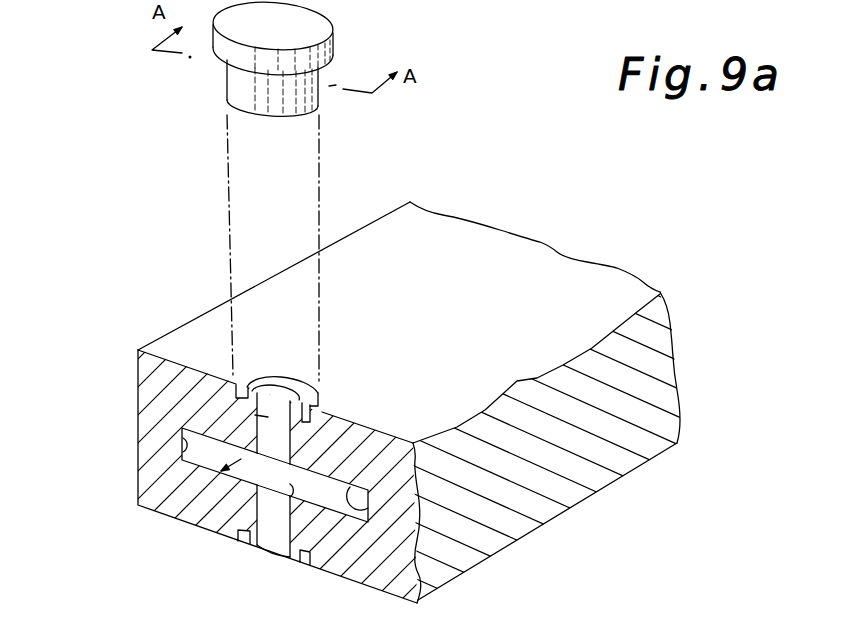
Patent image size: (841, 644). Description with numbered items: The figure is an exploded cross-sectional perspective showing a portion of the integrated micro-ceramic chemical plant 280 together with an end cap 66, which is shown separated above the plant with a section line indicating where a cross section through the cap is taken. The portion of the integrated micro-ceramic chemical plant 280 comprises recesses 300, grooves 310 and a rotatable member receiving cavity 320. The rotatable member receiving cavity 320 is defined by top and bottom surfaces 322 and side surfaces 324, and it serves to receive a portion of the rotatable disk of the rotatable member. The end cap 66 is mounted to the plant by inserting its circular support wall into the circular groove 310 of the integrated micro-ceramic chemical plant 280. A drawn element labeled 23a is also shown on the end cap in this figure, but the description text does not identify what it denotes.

The end cap 66 is at (335, 43).
The plug stem 23a is at (237, 88).
The integrated micro-ceramic chemical plant 280 is at (543, 278).
The groove 310 is at (240, 390).
The recess 300 is at (245, 410).
The rotatable member receiving cavity 320 is at (250, 468).
The side surface 324 is at (182, 440).
The top and bottom surfaces 322 is at (222, 478).